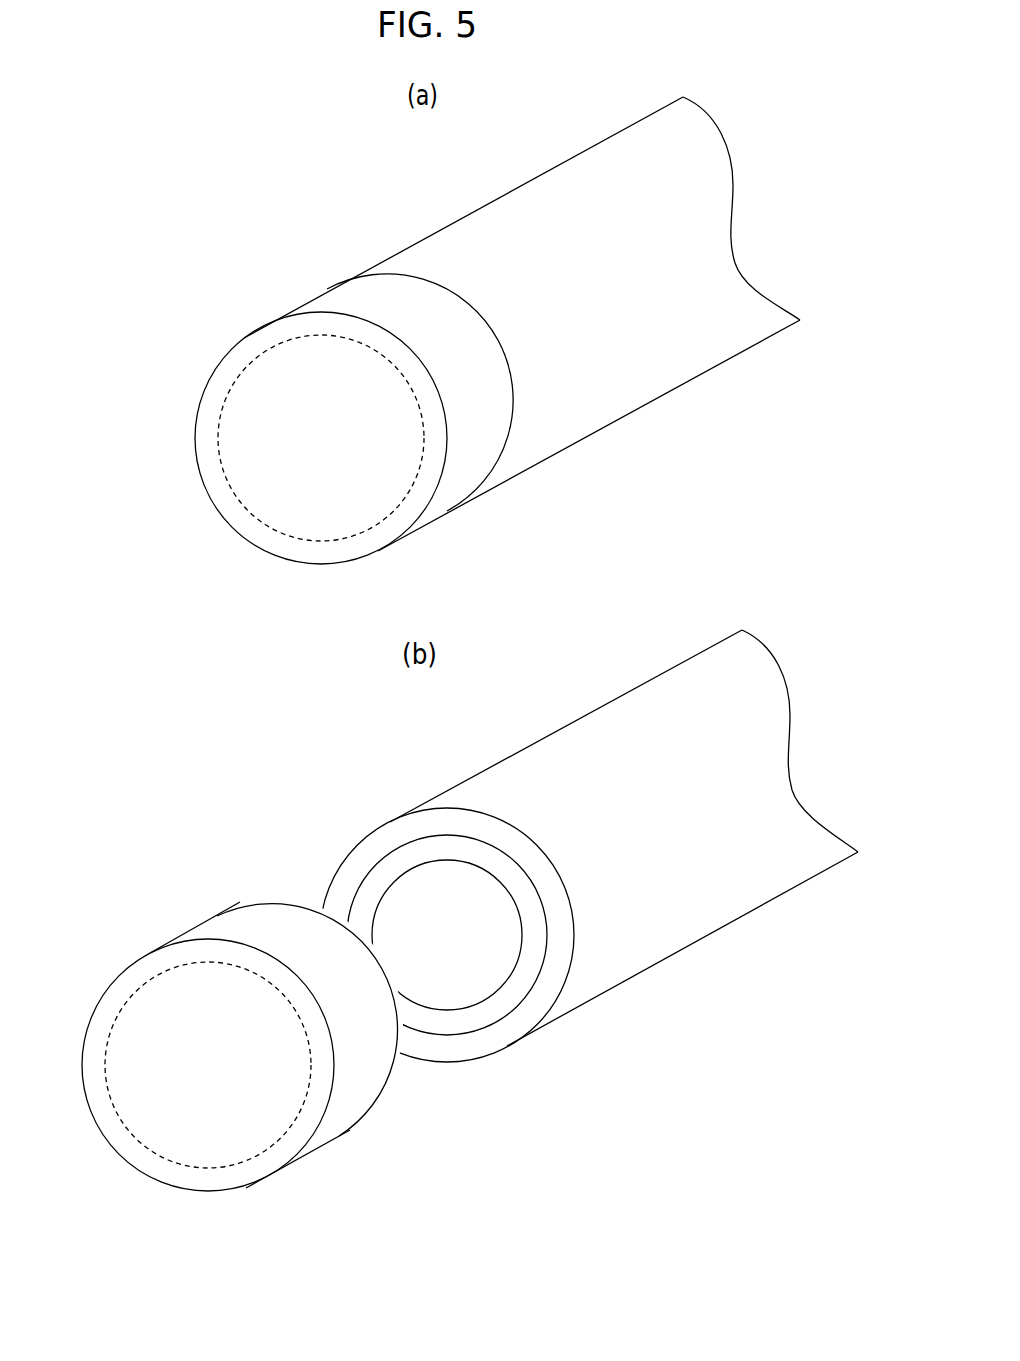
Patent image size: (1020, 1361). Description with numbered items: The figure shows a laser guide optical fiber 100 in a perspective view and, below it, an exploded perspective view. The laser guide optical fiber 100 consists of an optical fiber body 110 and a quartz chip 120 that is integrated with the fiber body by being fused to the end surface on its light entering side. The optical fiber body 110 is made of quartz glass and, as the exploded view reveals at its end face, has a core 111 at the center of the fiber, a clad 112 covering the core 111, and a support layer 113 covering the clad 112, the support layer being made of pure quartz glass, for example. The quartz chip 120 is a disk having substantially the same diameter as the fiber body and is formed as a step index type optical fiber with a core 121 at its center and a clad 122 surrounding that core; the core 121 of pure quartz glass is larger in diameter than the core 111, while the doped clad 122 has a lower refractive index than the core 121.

The laser guide optical fiber 100 is at (470, 658).
The optical fiber body 110 is at (551, 616).
The core 111 is at (458, 993).
The clad 112 is at (400, 860).
The support layer 113 is at (527, 1008).
The quartz chip 120 is at (297, 719).
The core 121 is at (347, 513).
The clad 122 is at (239, 350).